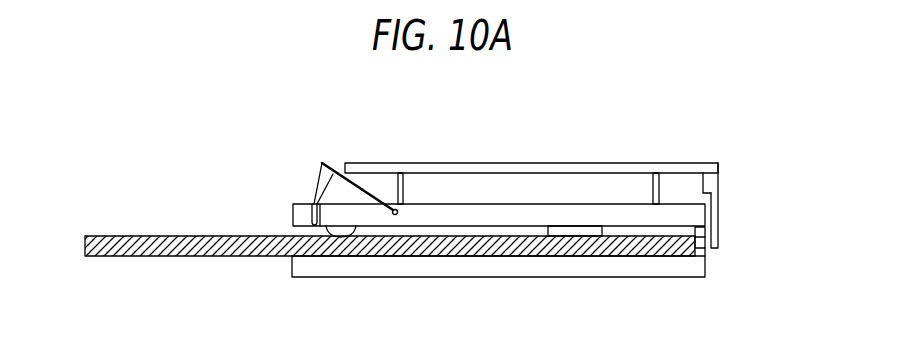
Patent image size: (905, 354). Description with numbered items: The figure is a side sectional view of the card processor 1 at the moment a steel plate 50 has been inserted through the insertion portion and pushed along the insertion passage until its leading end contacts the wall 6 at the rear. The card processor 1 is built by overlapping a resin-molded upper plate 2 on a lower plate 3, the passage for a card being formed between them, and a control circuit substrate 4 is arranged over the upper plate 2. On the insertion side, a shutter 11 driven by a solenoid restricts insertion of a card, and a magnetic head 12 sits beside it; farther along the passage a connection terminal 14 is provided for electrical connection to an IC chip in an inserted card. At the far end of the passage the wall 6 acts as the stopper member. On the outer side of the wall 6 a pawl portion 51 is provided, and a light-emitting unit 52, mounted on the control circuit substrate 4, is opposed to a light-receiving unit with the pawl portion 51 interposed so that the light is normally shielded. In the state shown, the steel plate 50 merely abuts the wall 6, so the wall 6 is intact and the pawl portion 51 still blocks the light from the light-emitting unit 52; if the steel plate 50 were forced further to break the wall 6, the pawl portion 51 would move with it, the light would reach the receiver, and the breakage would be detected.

The card processor 1 is at (590, 134).
The upper plate 2 is at (483, 212).
The lower plate 3 is at (602, 273).
The control circuit substrate 4 is at (716, 166).
The wall 6 is at (715, 256).
The shutter 11 is at (328, 175).
The magnetic head 12 is at (327, 232).
The connection terminal 14 is at (565, 230).
The steel plate 50 is at (113, 236).
The pawl portion 51 is at (716, 220).
The light-emitting unit 52 is at (718, 186).